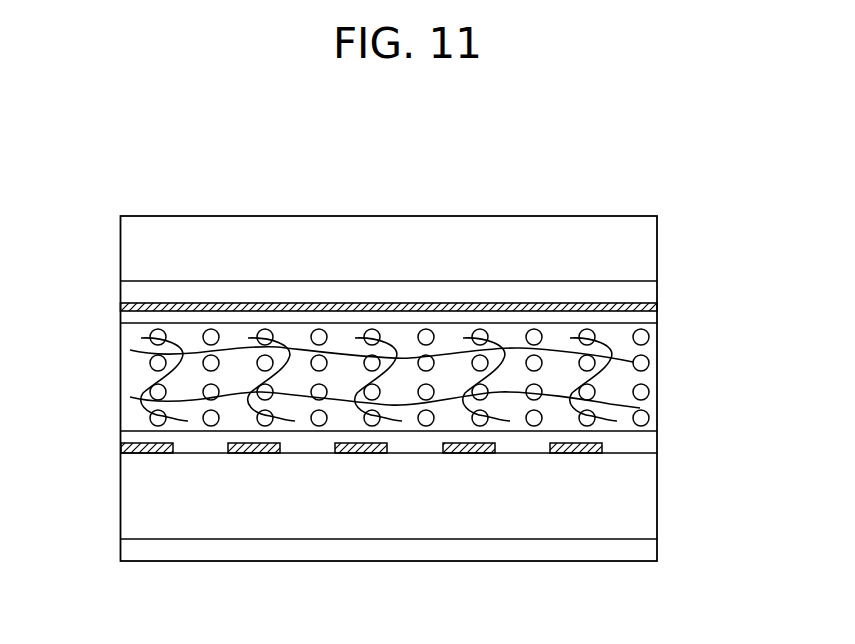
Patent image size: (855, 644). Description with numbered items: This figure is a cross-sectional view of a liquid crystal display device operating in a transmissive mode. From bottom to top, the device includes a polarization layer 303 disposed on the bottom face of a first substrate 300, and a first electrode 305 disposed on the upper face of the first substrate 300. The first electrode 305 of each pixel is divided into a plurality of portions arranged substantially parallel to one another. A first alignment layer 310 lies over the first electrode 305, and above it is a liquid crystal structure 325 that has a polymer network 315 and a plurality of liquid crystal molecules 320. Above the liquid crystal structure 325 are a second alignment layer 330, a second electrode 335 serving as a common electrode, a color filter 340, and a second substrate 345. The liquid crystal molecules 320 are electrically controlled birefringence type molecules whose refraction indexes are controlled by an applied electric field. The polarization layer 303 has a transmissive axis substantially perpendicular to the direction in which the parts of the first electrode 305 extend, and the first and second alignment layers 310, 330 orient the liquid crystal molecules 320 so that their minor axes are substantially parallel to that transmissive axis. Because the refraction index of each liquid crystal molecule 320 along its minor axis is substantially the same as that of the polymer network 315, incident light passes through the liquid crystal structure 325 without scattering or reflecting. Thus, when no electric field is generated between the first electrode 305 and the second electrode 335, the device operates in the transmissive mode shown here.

The first substrate 300 is at (652, 494).
The polarization layer 303 is at (652, 550).
The first electrode 305 is at (121, 445).
The first alignment layer 310 is at (652, 445).
The polymer network 315 is at (593, 377).
The liquid crystal molecules 320 is at (649, 337).
The liquid crystal structure 325 is at (743, 340).
The second alignment layer 330 is at (652, 320).
The second electrode 335 is at (652, 308).
The color filter 340 is at (652, 291).
The second substrate 345 is at (652, 238).